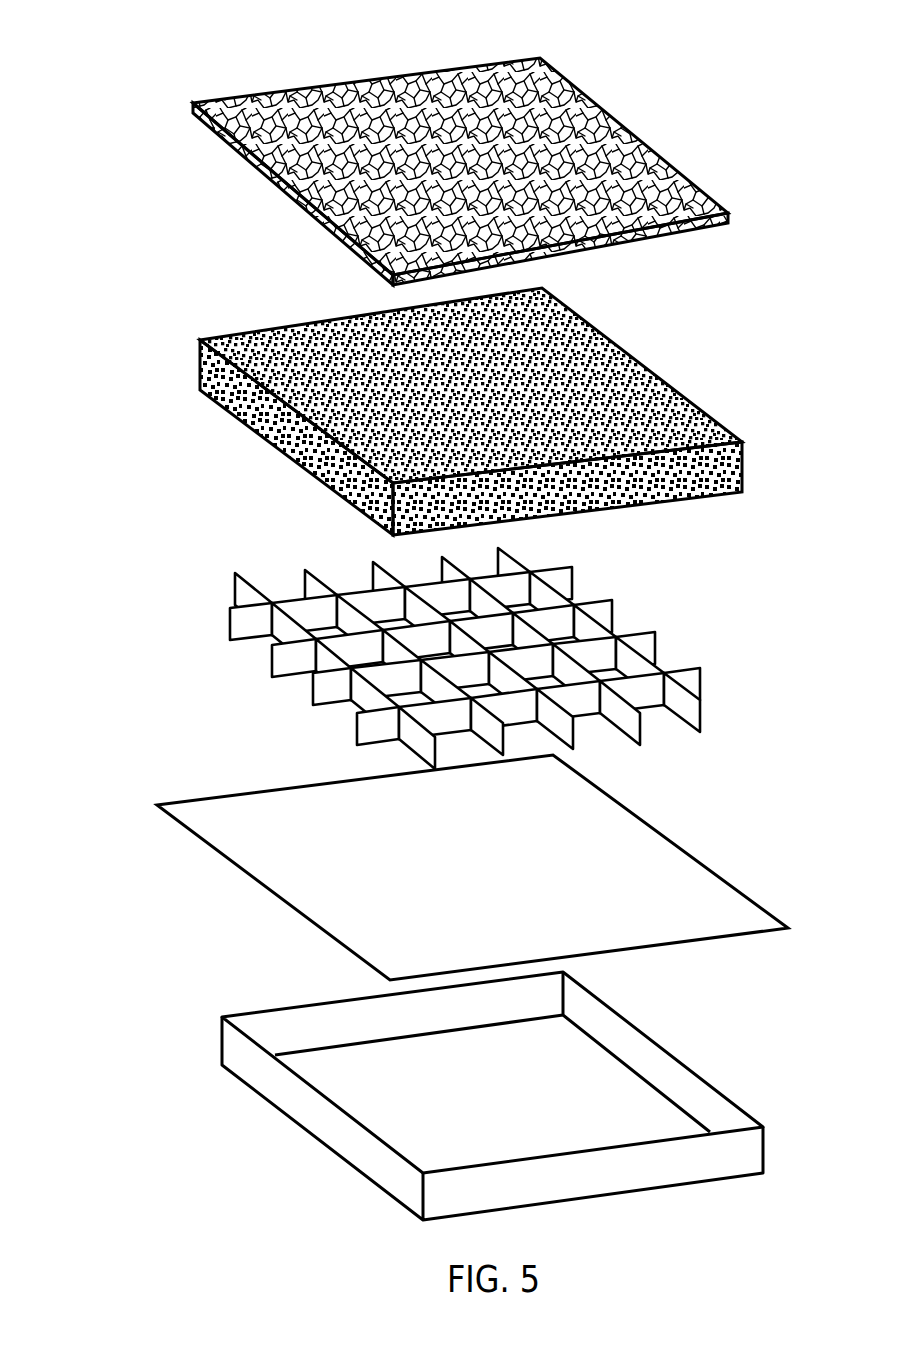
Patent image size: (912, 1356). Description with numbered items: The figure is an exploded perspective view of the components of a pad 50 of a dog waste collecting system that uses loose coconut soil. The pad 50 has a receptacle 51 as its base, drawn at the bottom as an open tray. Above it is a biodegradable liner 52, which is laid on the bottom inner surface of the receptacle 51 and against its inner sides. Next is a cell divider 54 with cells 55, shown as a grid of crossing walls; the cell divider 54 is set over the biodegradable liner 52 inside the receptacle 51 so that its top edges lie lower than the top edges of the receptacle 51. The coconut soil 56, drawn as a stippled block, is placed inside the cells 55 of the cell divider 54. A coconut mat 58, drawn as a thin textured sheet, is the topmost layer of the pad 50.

The pad 50 is at (95, 70).
The receptacle 51 is at (698, 1075).
The biodegradable liner 52 is at (725, 878).
The cell divider 54 is at (657, 642).
The cells 55 is at (305, 678).
The coconut soil 56 is at (702, 412).
The coconut mat 58 is at (650, 147).